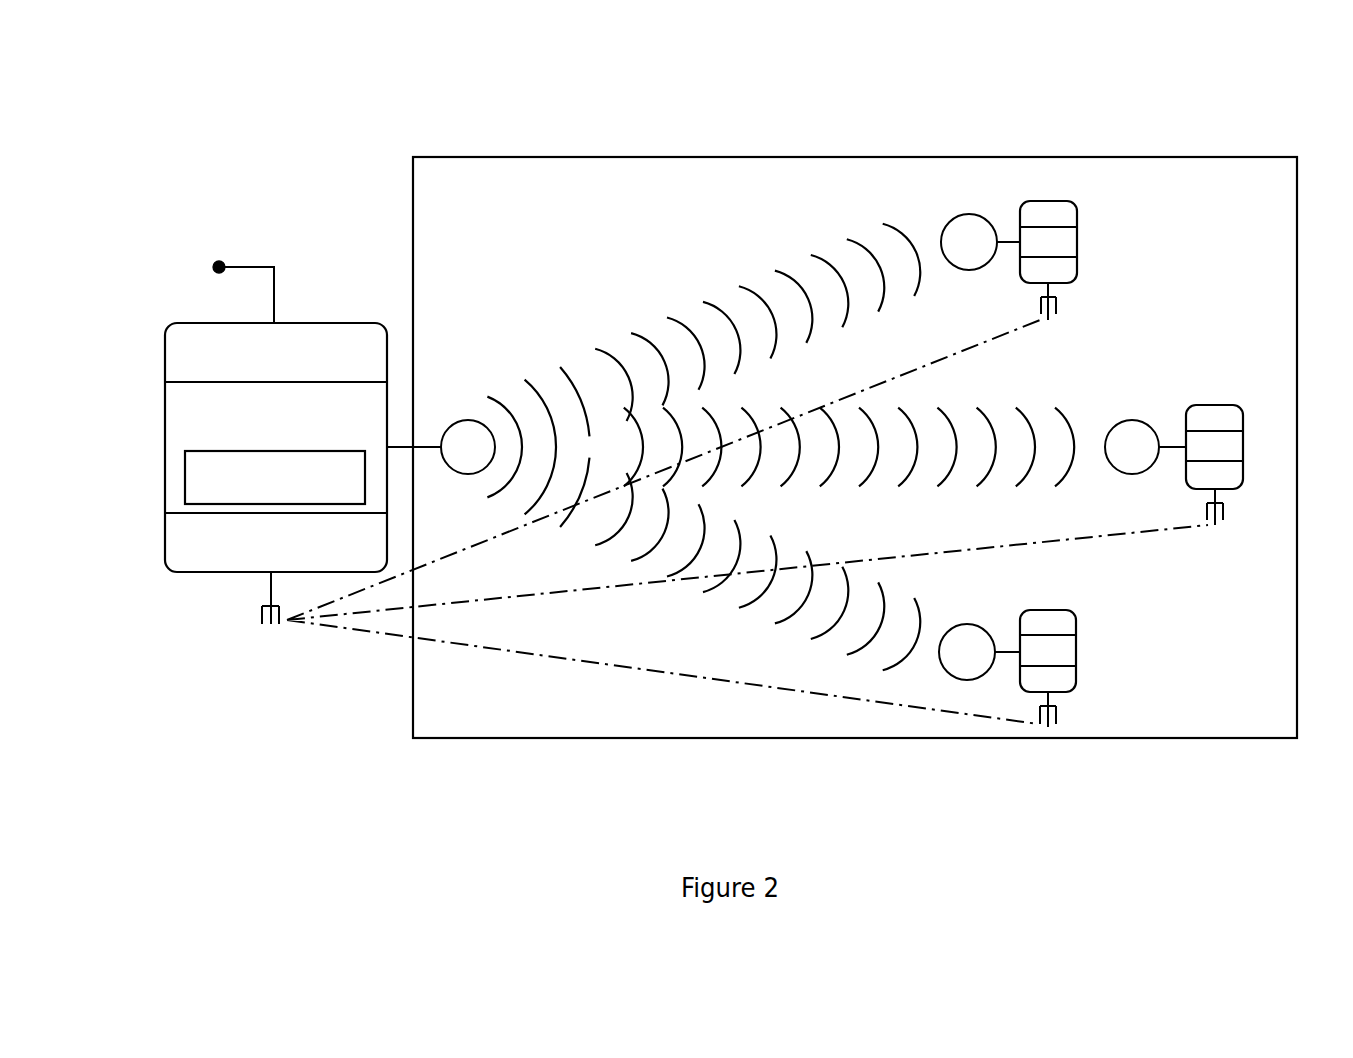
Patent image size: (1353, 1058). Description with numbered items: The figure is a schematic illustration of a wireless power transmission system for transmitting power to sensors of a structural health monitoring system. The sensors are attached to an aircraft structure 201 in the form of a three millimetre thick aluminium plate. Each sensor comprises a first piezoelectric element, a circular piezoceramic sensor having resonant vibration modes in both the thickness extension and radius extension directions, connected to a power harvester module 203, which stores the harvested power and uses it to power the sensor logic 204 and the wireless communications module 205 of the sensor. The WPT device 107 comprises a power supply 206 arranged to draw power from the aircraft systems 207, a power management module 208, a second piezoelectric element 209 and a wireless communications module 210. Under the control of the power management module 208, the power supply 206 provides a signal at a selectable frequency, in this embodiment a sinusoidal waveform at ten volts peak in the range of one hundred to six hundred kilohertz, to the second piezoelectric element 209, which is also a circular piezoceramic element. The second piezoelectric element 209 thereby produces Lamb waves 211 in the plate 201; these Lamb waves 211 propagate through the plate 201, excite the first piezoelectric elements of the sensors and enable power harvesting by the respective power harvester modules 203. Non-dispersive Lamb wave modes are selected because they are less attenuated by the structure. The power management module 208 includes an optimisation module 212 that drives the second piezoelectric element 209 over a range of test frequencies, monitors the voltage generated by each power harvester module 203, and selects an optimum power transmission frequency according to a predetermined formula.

The aircraft structure 201 is at (748, 157).
The power harvester module 203 is at (1072, 211).
The sensor logic 204 is at (1072, 245).
The wireless communications module 205 is at (1072, 270).
The WPT device 107 is at (307, 323).
The power supply 206 is at (203, 323).
The aircraft systems 207 is at (219, 267).
The power management module 208 is at (165, 440).
The second piezoelectric element 209 is at (462, 420).
The wireless communications module 210 is at (203, 572).
The Lamb waves 211 is at (595, 348).
The optimisation module 212 is at (185, 482).